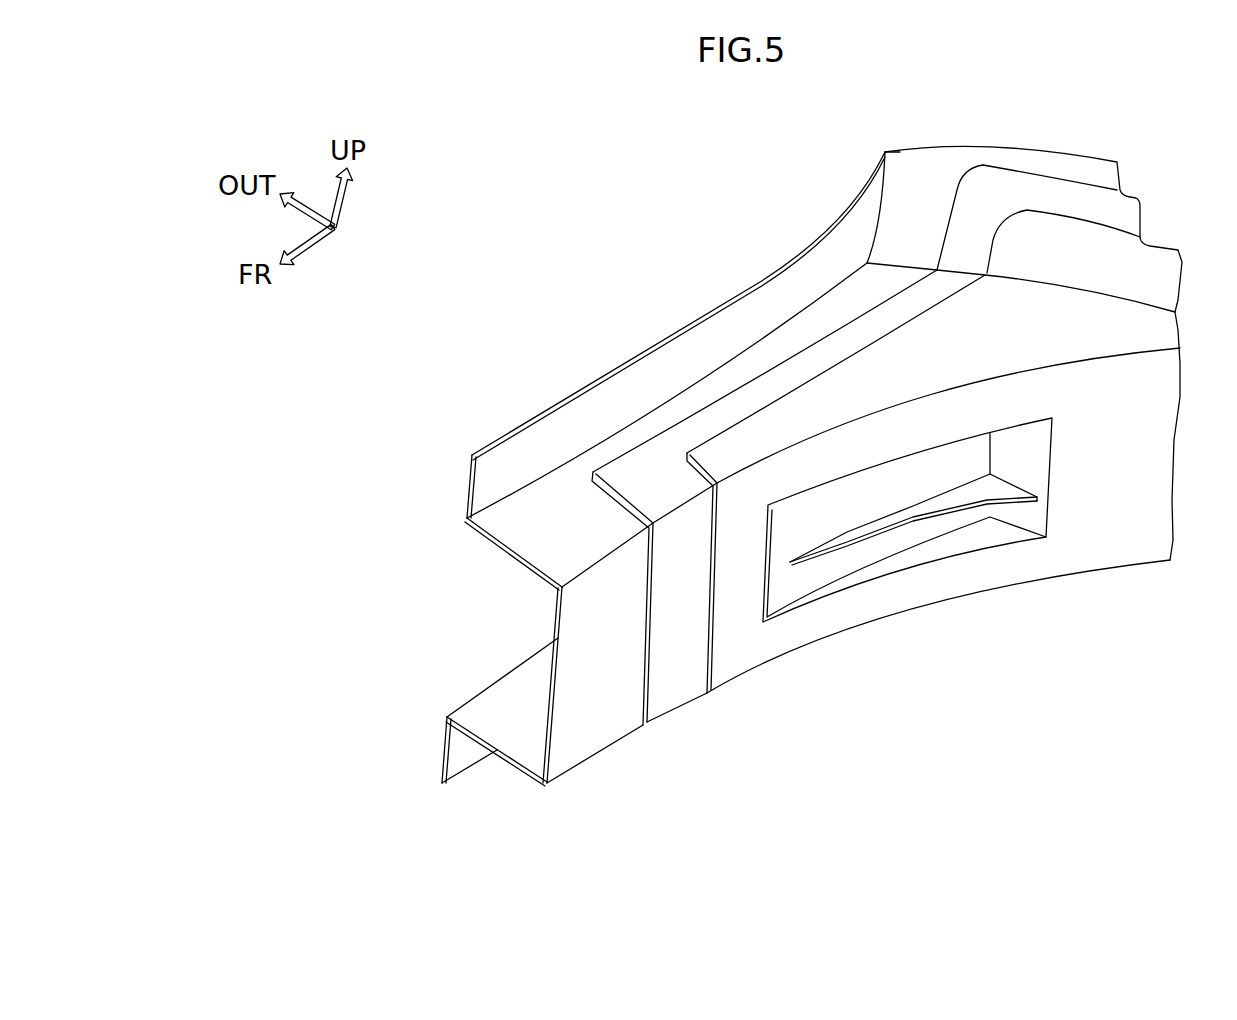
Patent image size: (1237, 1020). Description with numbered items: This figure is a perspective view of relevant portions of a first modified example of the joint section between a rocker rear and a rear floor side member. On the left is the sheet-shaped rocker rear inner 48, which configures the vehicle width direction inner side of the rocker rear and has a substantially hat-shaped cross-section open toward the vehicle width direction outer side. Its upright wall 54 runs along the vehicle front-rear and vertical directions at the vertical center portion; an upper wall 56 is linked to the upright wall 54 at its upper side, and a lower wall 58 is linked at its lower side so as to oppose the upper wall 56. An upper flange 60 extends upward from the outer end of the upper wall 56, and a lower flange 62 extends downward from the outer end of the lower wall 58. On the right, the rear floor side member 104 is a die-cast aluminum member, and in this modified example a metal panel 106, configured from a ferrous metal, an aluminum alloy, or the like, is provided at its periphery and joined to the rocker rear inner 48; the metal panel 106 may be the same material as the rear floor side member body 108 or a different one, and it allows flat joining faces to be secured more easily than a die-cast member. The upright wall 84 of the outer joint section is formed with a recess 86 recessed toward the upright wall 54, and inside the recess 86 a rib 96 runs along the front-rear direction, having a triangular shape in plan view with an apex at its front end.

The rocker rear inner 48 is at (558, 401).
The upright wall 54 is at (582, 630).
The upper wall 56 is at (507, 528).
The lower wall 58 is at (527, 752).
The upper flange 60 is at (487, 482).
The lower flange 62 is at (460, 752).
The upright wall 84 is at (737, 647).
The recess 86 is at (953, 539).
The rib 96 is at (987, 492).
The rear floor side member 104 is at (1131, 573).
The metal panel 106 is at (683, 677).
The rear floor side member body 108 is at (1080, 537).